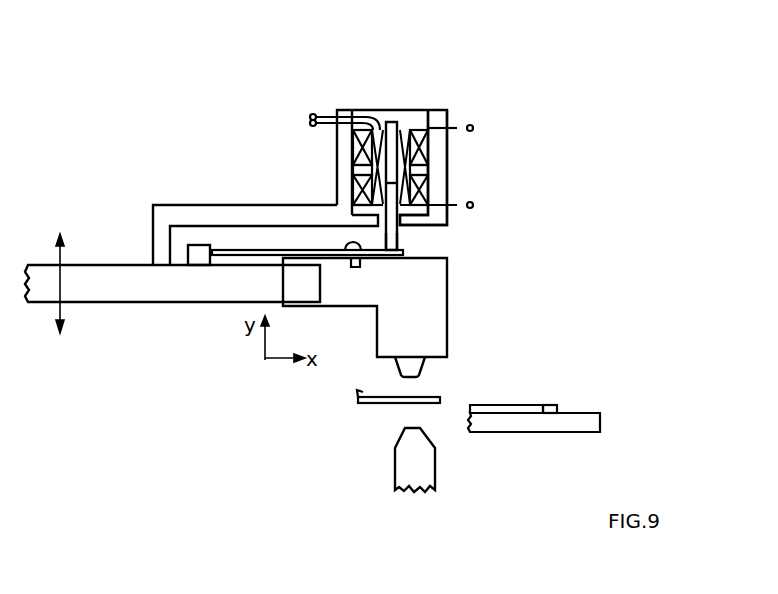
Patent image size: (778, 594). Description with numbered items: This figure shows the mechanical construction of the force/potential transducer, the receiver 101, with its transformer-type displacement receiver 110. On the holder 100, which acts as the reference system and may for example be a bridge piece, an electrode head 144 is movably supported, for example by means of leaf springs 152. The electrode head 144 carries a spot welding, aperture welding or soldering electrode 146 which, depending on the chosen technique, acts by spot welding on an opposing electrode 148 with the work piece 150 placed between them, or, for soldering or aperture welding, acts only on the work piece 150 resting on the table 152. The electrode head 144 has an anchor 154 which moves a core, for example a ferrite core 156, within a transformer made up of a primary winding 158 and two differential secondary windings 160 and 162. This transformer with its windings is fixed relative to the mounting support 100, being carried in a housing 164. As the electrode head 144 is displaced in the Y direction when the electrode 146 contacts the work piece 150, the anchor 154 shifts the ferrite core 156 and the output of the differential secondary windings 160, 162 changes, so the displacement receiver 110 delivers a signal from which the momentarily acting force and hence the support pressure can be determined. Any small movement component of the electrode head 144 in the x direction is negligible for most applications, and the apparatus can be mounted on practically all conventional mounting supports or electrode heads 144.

The holder 100 is at (122, 287).
The receiver 101 is at (230, 304).
The displacement receiver 110 is at (353, 97).
The electrode head 144 is at (437, 305).
The electrode 146 is at (410, 367).
The opposing electrode 148 is at (408, 464).
The work piece 150 is at (373, 402).
The table 152 is at (245, 252).
The anchor 154 is at (393, 233).
The ferrite core 156 is at (391, 128).
The primary winding 158 is at (377, 138).
The differential secondary winding 160 is at (425, 148).
The differential secondary winding 162 is at (425, 190).
The housing 164 is at (438, 117).